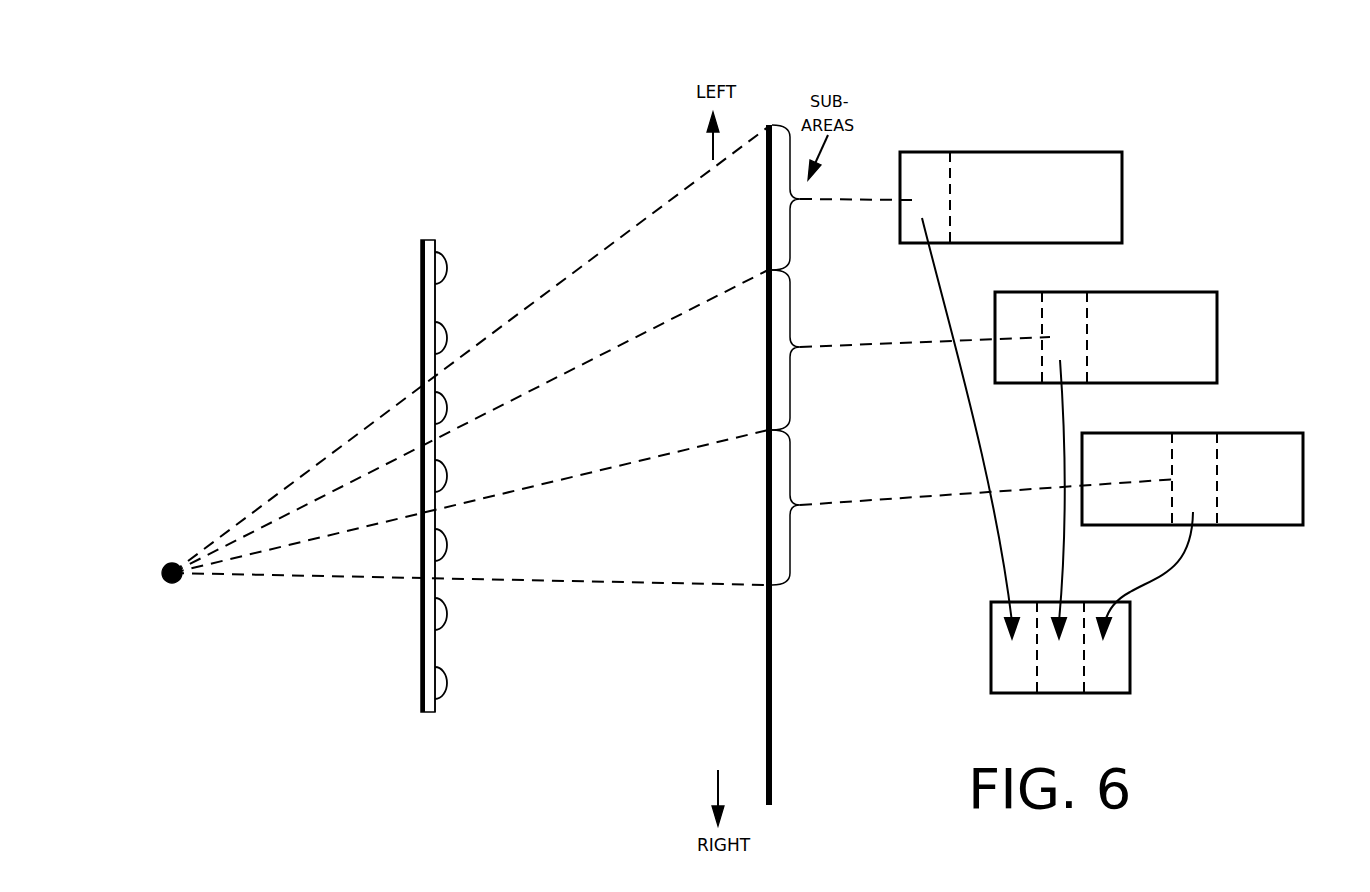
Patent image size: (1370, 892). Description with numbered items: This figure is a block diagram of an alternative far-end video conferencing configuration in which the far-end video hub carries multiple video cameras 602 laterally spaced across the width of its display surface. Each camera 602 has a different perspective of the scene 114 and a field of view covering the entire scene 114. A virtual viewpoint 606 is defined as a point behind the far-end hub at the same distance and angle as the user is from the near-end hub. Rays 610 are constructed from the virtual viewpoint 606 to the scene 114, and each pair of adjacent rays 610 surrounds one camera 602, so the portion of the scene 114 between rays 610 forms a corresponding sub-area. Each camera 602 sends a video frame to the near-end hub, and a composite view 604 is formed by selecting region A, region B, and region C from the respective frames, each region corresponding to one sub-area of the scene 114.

The video cameras 602 is at (447, 270).
The composite view 604 is at (1132, 636).
The virtual viewpoint 606 is at (168, 584).
The rays 610 is at (608, 250).
The scene 114 is at (767, 688).